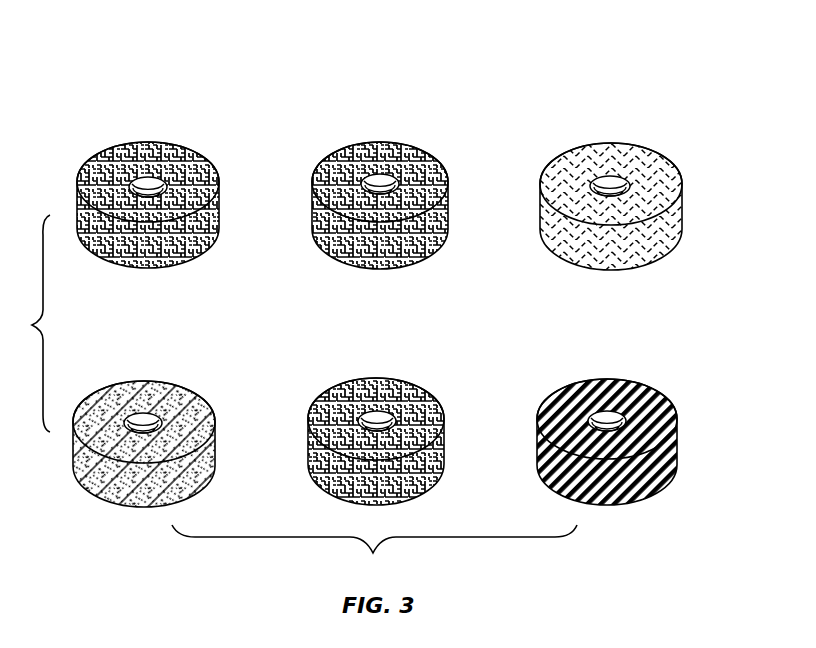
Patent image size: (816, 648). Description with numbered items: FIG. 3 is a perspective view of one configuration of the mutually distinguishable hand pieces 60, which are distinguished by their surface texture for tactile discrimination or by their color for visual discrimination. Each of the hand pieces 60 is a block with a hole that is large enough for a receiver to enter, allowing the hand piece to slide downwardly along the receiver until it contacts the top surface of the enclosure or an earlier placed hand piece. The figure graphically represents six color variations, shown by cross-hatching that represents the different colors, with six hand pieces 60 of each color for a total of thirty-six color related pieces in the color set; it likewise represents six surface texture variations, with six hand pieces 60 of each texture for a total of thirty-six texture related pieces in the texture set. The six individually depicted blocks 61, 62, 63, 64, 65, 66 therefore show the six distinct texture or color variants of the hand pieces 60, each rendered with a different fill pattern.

The hand pieces 60 is at (620, 98).
The anchor member 61 is at (112, 152).
The anchor member 62 is at (350, 152).
The anchor member 63 is at (570, 160).
The anchor member 64 is at (110, 393).
The anchor member 65 is at (345, 390).
The anchor member 66 is at (567, 390).